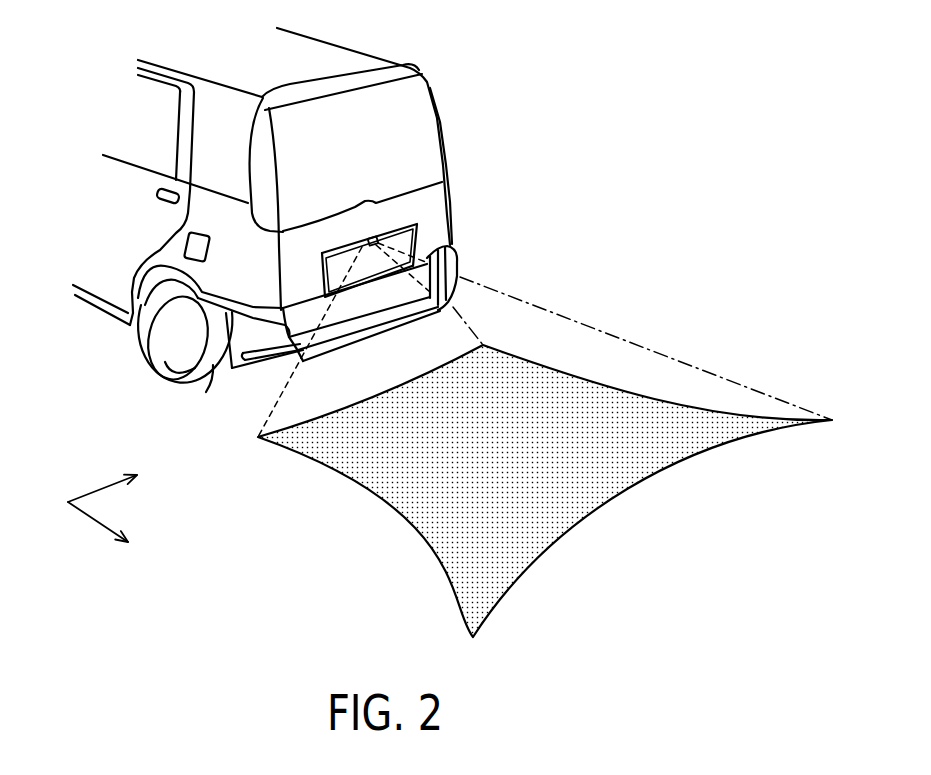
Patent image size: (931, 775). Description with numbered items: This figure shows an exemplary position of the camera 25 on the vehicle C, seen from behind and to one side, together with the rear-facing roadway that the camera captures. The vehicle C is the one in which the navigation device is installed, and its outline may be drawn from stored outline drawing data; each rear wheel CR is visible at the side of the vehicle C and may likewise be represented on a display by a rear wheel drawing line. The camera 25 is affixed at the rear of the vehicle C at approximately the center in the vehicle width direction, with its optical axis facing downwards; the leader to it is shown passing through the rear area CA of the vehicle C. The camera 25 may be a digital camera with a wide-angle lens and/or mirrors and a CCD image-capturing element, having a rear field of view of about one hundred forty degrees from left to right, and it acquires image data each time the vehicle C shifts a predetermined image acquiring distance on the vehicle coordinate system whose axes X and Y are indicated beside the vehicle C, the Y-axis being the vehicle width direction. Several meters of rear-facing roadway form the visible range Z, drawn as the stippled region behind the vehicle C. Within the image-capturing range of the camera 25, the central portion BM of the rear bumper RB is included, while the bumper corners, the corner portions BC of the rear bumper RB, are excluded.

The vehicle C is at (353, 50).
The camera 25 is at (374, 236).
The rear hatch (camera mounting area) CA is at (432, 217).
The rear wheel CR is at (142, 352).
The rear bumper RB is at (346, 339).
The central portion BM is at (404, 320).
The corner portions BC is at (453, 303).
The visible range Z is at (483, 465).
The X-axis of vehicle coordinate system X is at (109, 538).
The Y-axis of vehicle coordinate system Y is at (117, 478).